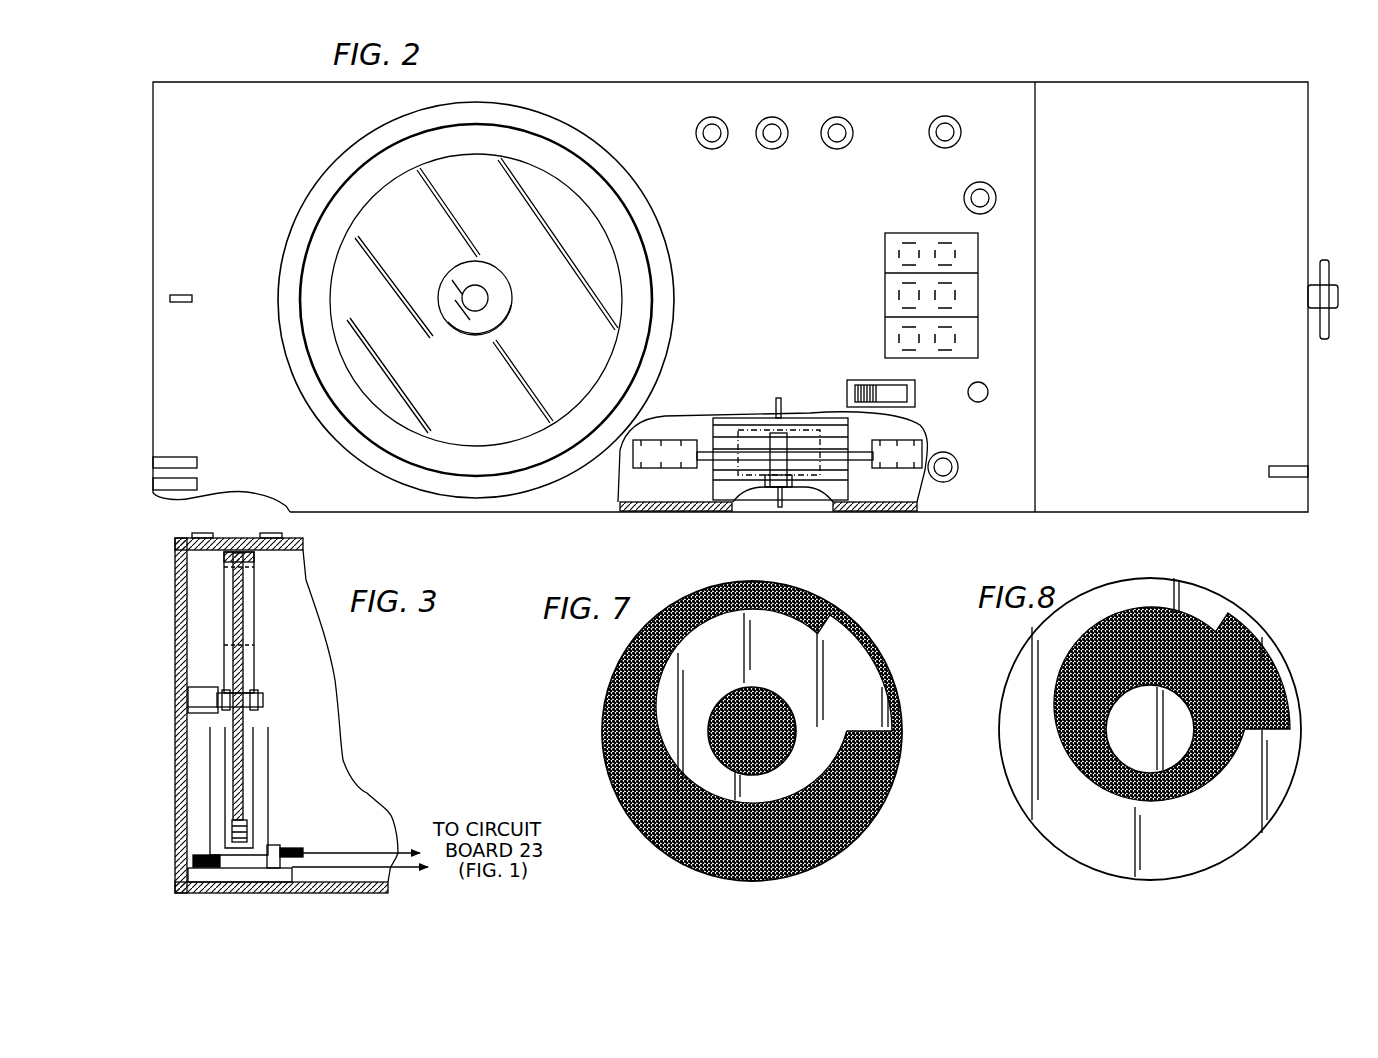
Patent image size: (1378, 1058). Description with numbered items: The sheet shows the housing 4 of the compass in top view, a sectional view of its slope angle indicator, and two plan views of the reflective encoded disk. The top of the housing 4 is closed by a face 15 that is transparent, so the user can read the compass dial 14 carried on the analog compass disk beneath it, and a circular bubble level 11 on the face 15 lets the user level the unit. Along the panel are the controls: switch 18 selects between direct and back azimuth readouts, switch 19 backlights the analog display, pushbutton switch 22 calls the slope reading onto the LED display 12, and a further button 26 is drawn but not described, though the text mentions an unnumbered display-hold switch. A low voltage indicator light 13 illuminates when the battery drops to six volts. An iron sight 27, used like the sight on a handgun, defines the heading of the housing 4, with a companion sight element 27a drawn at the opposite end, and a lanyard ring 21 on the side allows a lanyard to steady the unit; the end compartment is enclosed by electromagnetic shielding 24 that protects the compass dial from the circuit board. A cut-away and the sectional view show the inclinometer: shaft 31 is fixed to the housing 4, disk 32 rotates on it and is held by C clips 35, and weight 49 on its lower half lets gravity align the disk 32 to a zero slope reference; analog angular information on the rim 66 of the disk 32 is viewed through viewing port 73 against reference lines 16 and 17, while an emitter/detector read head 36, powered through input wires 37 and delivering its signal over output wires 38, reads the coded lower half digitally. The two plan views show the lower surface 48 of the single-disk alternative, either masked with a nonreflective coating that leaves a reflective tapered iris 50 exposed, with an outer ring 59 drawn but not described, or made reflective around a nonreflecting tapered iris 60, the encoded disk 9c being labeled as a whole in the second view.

In FIG. 2, the housing 4 is at (786, 266).
In FIG. 3, the housing 4 is at (172, 630).
In FIG. 8, the disc 9c is at (1303, 685).
In FIG. 2, the circular bubble level 11 is at (495, 282).
In FIG. 2, the LED display 12 is at (882, 307).
In FIG. 2, the low voltage indicator light 13 is at (981, 402).
In FIG. 2, the compass dial 14 is at (330, 283).
In FIG. 2, the face 15 is at (550, 157).
In FIG. 2, the reference line 16 is at (783, 403).
In FIG. 3, the reference line 16 is at (272, 533).
In FIG. 2, the reference line 17 is at (780, 490).
In FIG. 3, the reference line 17 is at (200, 533).
In FIG. 2, the switch 18 is at (775, 150).
In FIG. 2, the switch 19 is at (841, 150).
In FIG. 2, the lanyard ring 21 is at (1329, 277).
In FIG. 2, the pushbutton switch 22 is at (963, 200).
In FIG. 2, the electromagnetic shielding 24 is at (1186, 247).
In FIG. 2, the push button 26 is at (715, 150).
In FIG. 2, the iron sight 27 is at (170, 455).
In FIG. 2, the bracket 27a is at (1289, 466).
In FIG. 3, the shaft 31 is at (200, 718).
In FIG. 3, the disk 32 is at (243, 620).
In FIG. 3, the C clips 35 is at (247, 693).
In FIG. 3, the emitter/detector read head 36 is at (263, 760).
In FIG. 3, the electrical input wires 37 is at (337, 851).
In FIG. 3, the output wires 38 is at (370, 858).
In FIG. 7, the lower surface 48 is at (782, 666).
In FIG. 8, the lower surface 48 is at (1156, 722).
In FIG. 3, the weight 49 is at (247, 828).
In FIG. 7, the tapered iris 50 is at (813, 603).
In FIG. 7, the outer ring 59 is at (858, 645).
In FIG. 8, the non-reflecting tapered iris 60 is at (1240, 632).
In FIG. 3, the rim 66 is at (257, 557).
In FIG. 2, the viewing port 73 is at (710, 470).